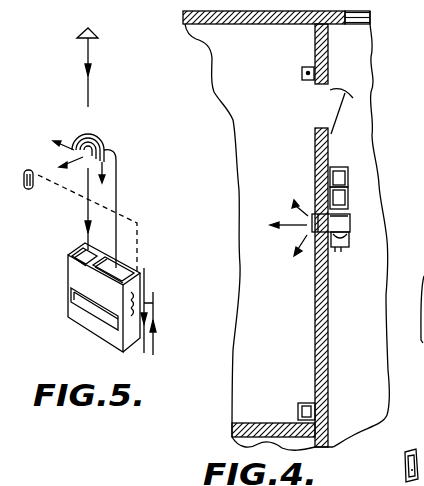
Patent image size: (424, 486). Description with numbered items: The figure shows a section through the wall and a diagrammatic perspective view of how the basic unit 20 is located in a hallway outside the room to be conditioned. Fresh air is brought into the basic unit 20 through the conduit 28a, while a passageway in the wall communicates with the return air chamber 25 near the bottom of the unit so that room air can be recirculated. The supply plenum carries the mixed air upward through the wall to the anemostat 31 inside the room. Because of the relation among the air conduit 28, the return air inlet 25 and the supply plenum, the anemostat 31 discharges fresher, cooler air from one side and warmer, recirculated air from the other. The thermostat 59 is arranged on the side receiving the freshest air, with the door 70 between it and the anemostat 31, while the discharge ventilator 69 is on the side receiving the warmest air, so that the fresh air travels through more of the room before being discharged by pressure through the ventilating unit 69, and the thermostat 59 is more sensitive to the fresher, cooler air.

In FIG. 4, the basic unit 20 is at (338, 247).
In FIG. 5, the return air chamber 25 is at (93, 308).
In FIG. 4, the air conduit 28 is at (347, 193).
In FIG. 4, the conduit 28a is at (344, 170).
In FIG. 5, the anemostat 31 is at (102, 133).
In FIG. 4, the anemostat 31 is at (303, 230).
In FIG. 5, the thermostat 59 is at (28, 189).
In FIG. 4, the thermostat 59 is at (302, 67).
In FIG. 4, the ventilating unit 69 is at (298, 408).
In FIG. 4, the door 70 is at (334, 110).